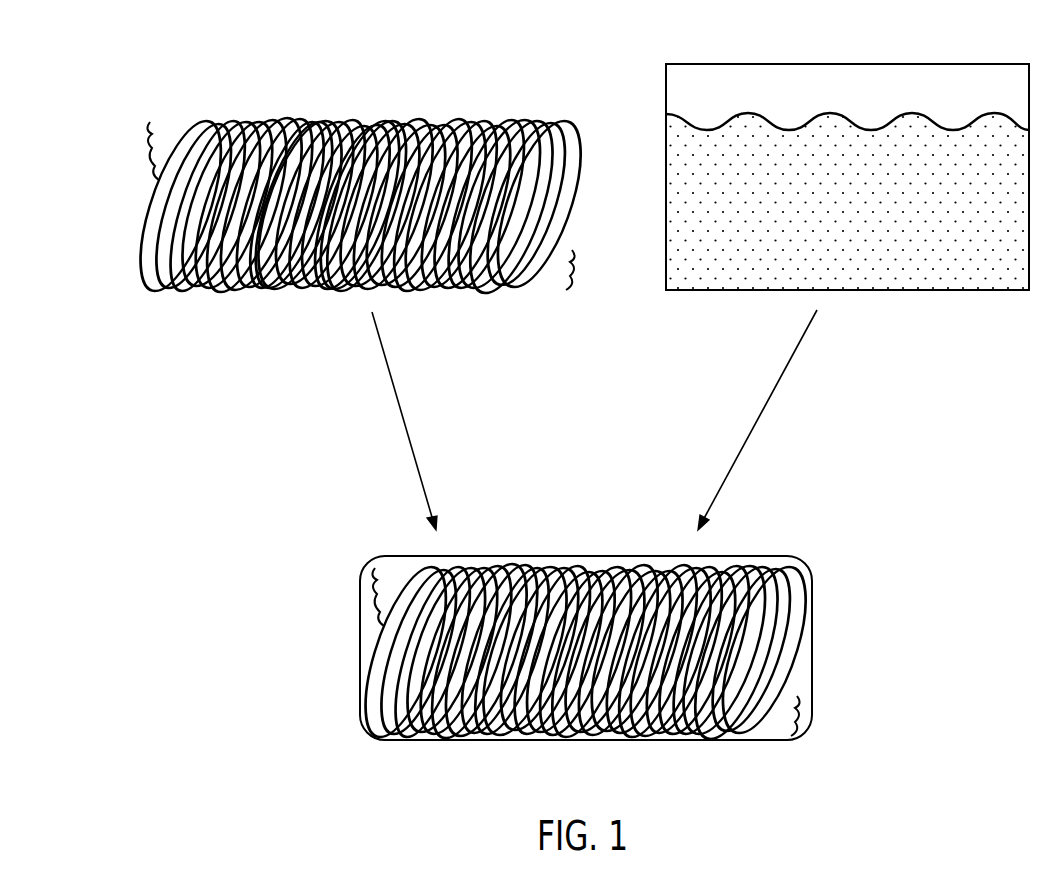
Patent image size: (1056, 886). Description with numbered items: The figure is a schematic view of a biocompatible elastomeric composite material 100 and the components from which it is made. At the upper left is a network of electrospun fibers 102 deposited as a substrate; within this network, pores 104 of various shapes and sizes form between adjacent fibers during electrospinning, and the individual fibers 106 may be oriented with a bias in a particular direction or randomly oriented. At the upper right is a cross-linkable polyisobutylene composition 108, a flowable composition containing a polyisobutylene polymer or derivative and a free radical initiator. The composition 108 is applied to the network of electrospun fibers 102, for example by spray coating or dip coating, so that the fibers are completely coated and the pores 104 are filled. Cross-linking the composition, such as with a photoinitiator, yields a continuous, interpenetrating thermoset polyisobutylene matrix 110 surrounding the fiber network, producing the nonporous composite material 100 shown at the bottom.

The biocompatible elastomeric composite material 100 is at (586, 604).
The network of electrospun fibers 102 is at (359, 156).
The pores 104 is at (296, 115).
The individual fibers 106 is at (366, 116).
The cross-linkable polyisobutylene composition 108 is at (680, 162).
The thermoset polyisobutylene matrix 110 is at (731, 557).